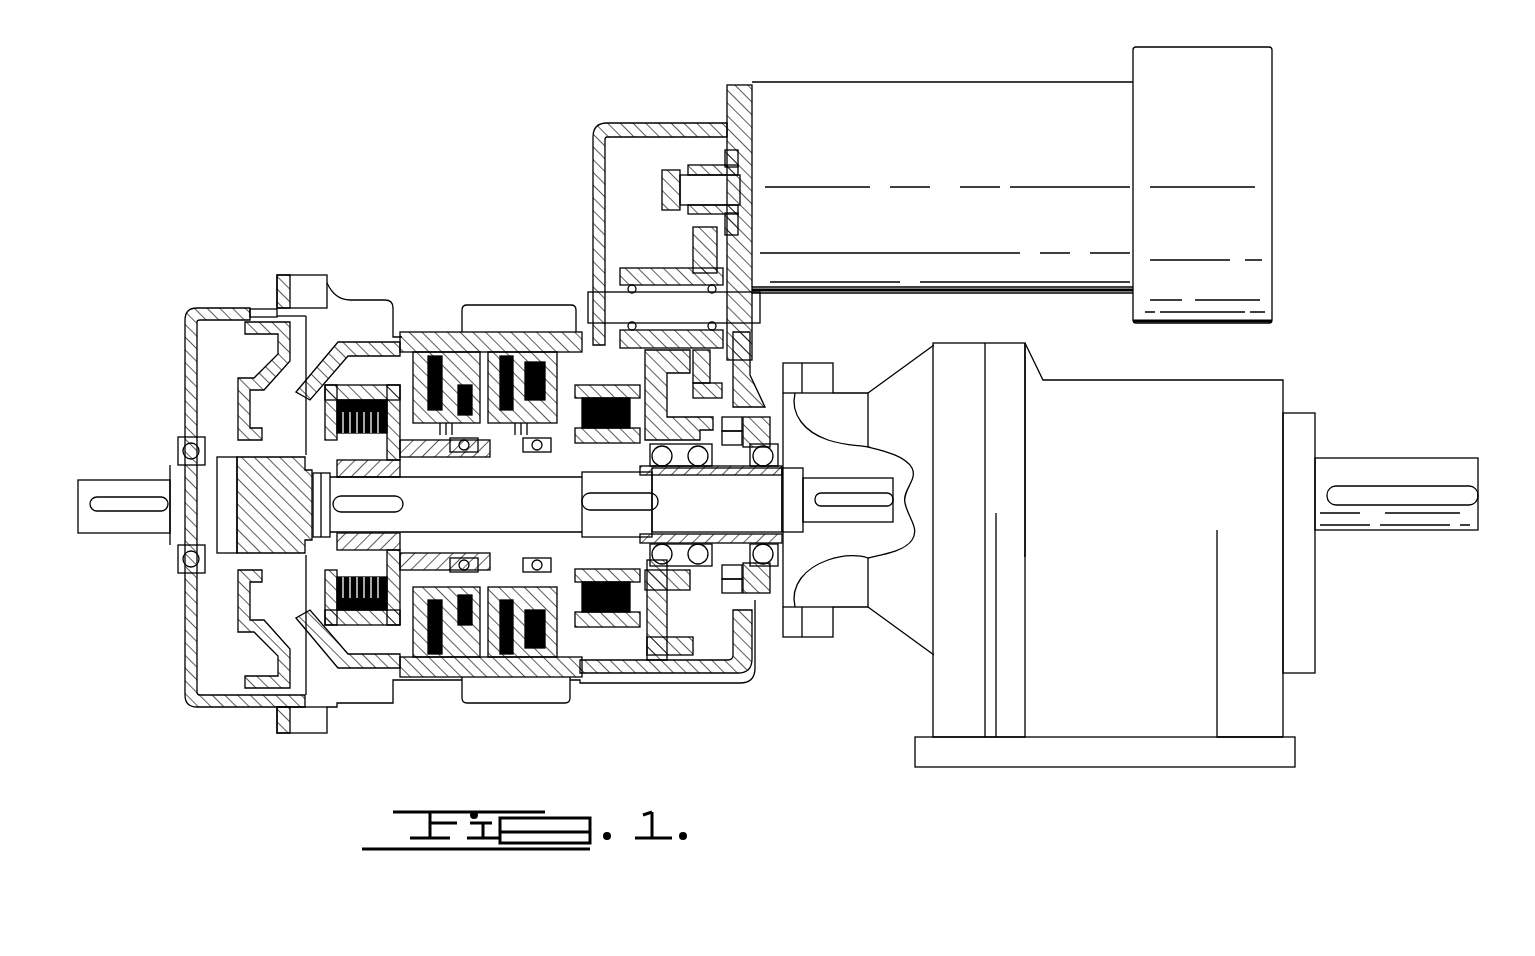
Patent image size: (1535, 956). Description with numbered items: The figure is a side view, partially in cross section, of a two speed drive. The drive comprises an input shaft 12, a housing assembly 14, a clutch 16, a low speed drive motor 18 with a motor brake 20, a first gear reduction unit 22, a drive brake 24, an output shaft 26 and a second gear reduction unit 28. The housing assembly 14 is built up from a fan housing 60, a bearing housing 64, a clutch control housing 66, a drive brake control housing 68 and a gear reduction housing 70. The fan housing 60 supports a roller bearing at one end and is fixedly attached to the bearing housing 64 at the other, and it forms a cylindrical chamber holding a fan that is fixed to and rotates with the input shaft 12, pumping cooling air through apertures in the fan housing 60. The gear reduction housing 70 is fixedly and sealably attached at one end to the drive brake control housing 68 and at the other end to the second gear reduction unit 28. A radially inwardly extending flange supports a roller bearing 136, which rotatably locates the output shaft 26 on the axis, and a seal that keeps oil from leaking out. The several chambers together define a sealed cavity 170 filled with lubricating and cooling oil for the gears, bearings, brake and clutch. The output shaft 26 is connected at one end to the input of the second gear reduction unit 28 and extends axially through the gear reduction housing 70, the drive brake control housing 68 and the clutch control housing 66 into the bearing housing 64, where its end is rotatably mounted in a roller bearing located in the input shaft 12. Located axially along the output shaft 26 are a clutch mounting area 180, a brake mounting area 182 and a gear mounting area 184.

The input shaft 12 is at (125, 527).
The housing assembly 14 is at (668, 688).
The clutch 16 is at (365, 617).
The low speed drive motor 18 is at (985, 97).
The motor brake 20 is at (1265, 194).
The first gear reduction unit 22 is at (742, 341).
The drive brake 24 is at (610, 613).
The output shaft 26 is at (879, 485).
The second gear reduction unit 28 is at (1173, 473).
The fan housing 60 is at (255, 712).
The bearing housing 64 is at (361, 347).
The clutch control housing 66 is at (440, 334).
The drive brake control housing 68 is at (512, 679).
The gear reduction housing 70 is at (748, 682).
The roller bearing 136 is at (762, 463).
The sealed cavity 170 is at (737, 616).
The clutch mounting area 180 is at (400, 493).
The brake mounting area 182 is at (595, 500).
The gear mounting area 184 is at (716, 505).